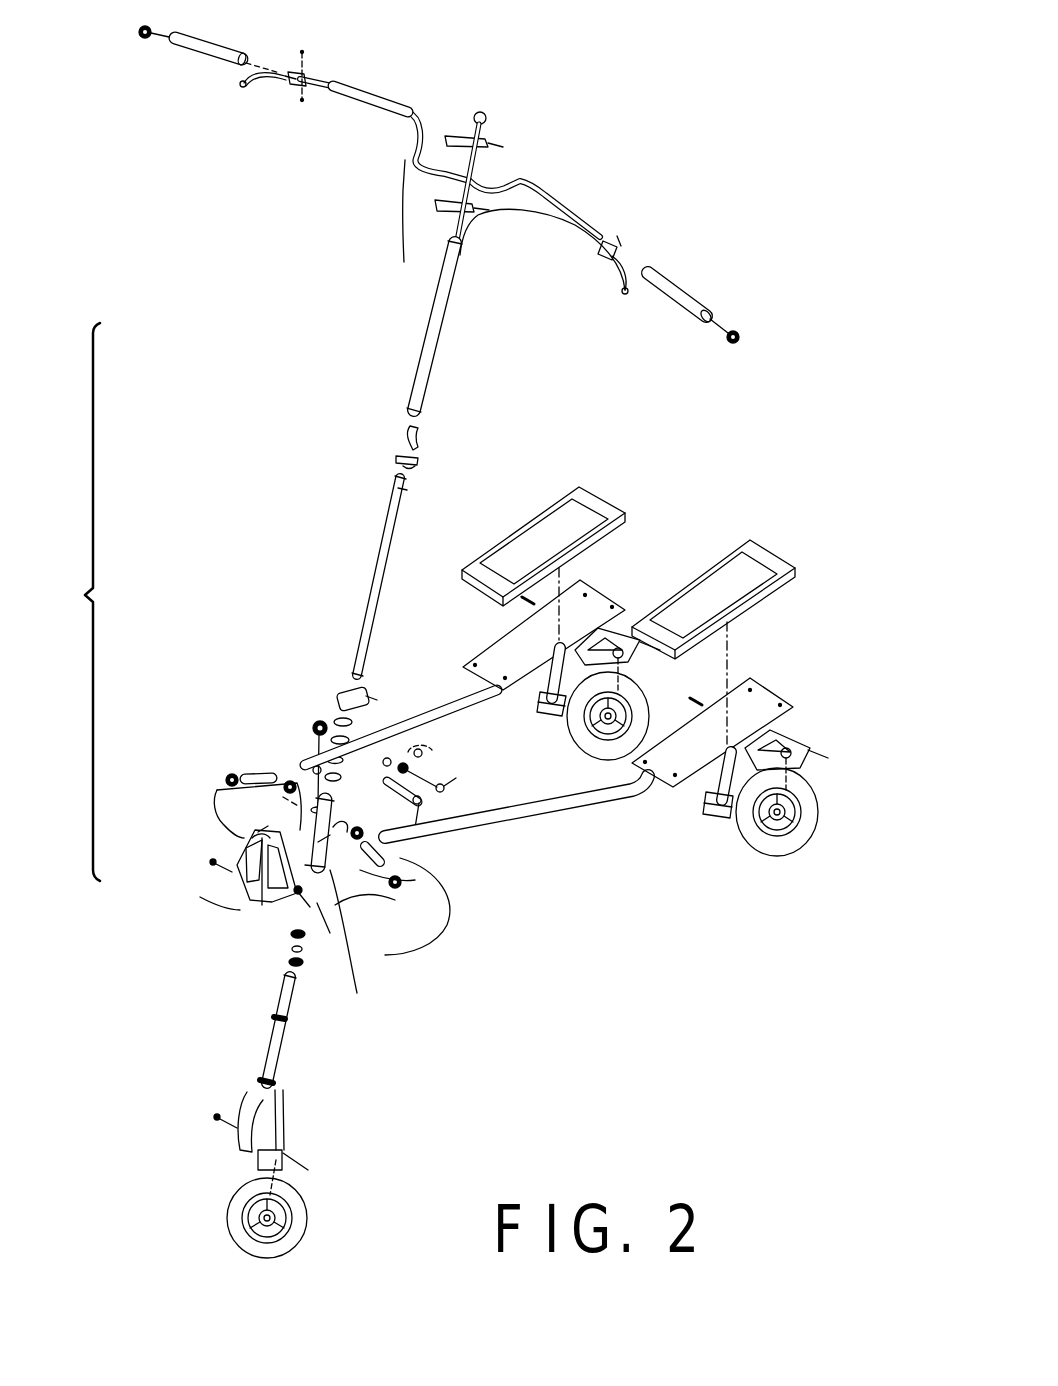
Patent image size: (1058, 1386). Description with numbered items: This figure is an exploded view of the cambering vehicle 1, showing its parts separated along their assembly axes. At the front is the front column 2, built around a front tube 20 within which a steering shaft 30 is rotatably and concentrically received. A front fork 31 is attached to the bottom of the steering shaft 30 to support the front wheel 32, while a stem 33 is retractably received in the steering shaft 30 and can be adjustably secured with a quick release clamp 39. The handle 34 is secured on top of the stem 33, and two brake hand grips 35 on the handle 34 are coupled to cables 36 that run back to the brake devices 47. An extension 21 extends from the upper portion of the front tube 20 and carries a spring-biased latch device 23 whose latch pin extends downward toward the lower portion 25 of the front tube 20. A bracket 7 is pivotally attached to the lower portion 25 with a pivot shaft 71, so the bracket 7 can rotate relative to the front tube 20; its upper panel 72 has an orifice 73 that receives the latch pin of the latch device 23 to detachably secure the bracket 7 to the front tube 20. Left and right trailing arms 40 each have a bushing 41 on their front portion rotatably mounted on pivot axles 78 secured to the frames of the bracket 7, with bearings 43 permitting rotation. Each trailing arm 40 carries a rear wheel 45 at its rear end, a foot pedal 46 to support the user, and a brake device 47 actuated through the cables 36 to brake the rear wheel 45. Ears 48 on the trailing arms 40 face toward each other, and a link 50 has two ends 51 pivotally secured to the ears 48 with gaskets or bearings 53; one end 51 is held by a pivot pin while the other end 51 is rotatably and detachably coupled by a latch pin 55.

The cambering vehicle 1 is at (275, 496).
The front column 2 is at (253, 651).
The bracket 7 is at (240, 887).
The front tube 20 is at (310, 832).
The extension 21 is at (258, 772).
The spring-biased latch device 23 is at (318, 718).
The lower portion of the front tube 25 is at (357, 943).
The steering shaft 30 is at (373, 588).
The front fork 31 is at (278, 1053).
The front wheel 32 is at (307, 1210).
The stem 33 is at (430, 363).
The handle 34 is at (567, 200).
The brake hand grips 35 is at (264, 87).
The cables 36 is at (398, 192).
The quick release clamp 39 is at (418, 457).
The trailing arms 40 is at (457, 697).
The bushing 41 is at (250, 773).
The bearings 43 is at (433, 900).
The rear wheel 45 is at (644, 718).
The foot pedal 46 is at (603, 598).
The brake devices 47 is at (563, 693).
The ears 48 is at (316, 767).
The link 50 is at (430, 782).
The ends of the link 51 is at (550, 774).
The gaskets or bearings 53 is at (424, 750).
The latch pin 55 is at (387, 757).
The pivot shaft 71 is at (290, 914).
The upper panel 72 is at (250, 834).
The orifice 73 is at (265, 837).
The pivot axles 78 is at (310, 930).